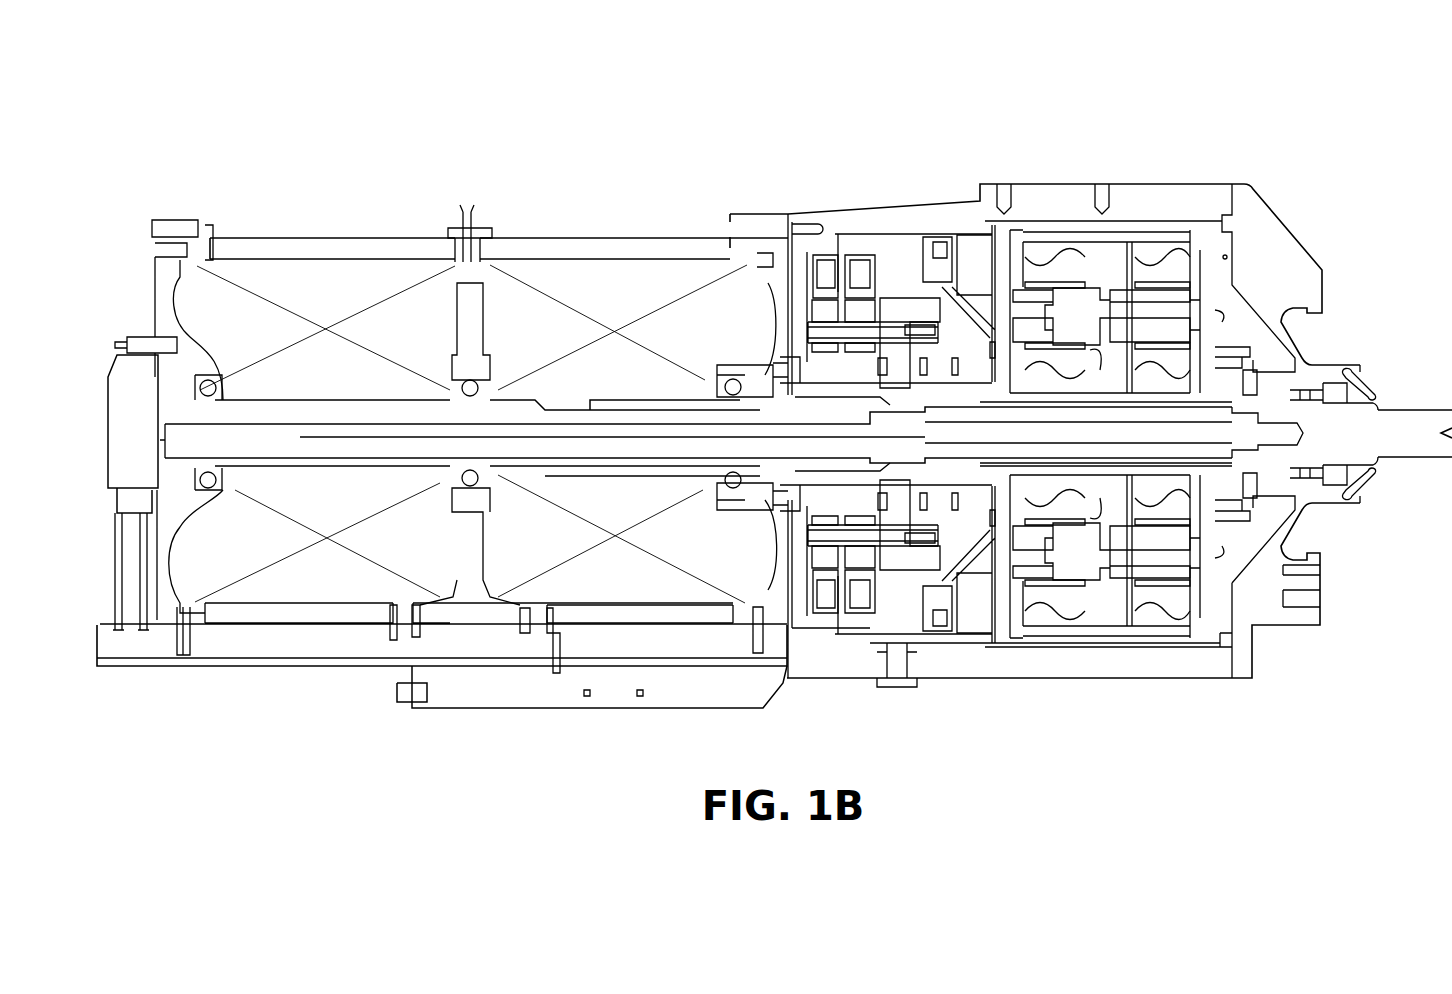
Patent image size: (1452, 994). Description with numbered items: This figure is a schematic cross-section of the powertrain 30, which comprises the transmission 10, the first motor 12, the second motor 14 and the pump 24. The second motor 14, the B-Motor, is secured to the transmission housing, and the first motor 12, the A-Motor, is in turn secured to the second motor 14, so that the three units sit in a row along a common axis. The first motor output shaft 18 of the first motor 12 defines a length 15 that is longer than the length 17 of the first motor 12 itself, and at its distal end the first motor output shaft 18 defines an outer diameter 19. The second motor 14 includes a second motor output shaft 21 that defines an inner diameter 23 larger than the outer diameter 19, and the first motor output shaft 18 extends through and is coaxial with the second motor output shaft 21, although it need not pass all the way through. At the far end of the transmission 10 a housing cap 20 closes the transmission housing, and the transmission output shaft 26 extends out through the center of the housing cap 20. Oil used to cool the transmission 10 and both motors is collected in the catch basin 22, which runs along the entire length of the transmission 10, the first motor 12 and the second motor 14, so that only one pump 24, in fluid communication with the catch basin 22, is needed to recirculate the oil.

The transmission 10 is at (1052, 132).
The first motor 12 is at (318, 237).
The second motor 14 is at (565, 237).
The length 15 is at (372, 452).
The length 17 is at (467, 210).
The first motor output shaft 18 is at (400, 398).
The outer diameter 19 is at (803, 420).
The housing cap 20 is at (1295, 237).
The second motor output shaft 21 is at (640, 392).
The catch basin 22 is at (225, 667).
The inner diameter 23 is at (640, 474).
The pump 24 is at (110, 440).
The output shaft 26 is at (1437, 409).
The powertrain 30 is at (312, 675).